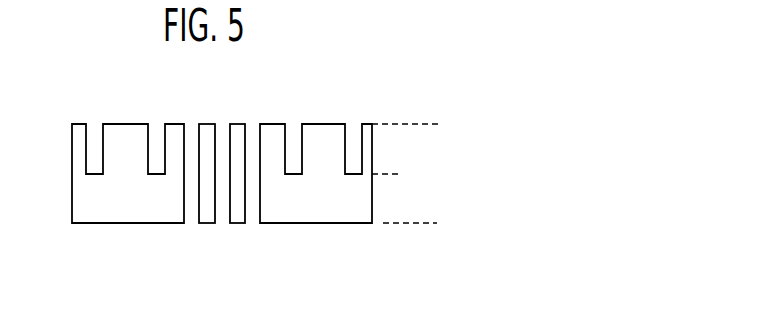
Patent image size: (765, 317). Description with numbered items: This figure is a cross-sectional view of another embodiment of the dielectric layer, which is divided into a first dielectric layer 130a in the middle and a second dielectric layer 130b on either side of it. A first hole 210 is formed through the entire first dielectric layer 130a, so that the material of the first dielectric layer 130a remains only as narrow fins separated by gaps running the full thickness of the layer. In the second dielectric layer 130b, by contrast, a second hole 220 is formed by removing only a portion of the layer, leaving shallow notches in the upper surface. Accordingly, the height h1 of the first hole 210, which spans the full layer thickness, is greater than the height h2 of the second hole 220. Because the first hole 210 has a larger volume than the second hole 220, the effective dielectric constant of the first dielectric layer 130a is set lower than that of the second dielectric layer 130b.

The first dielectric layer 130a is at (223, 169).
The second dielectric layer 130b is at (222, 169).
The first hole 210 is at (249, 132).
The second hole 220 is at (355, 135).
The height of the first hole h1 is at (432, 124).
The height of the second hole h2 is at (390, 124).